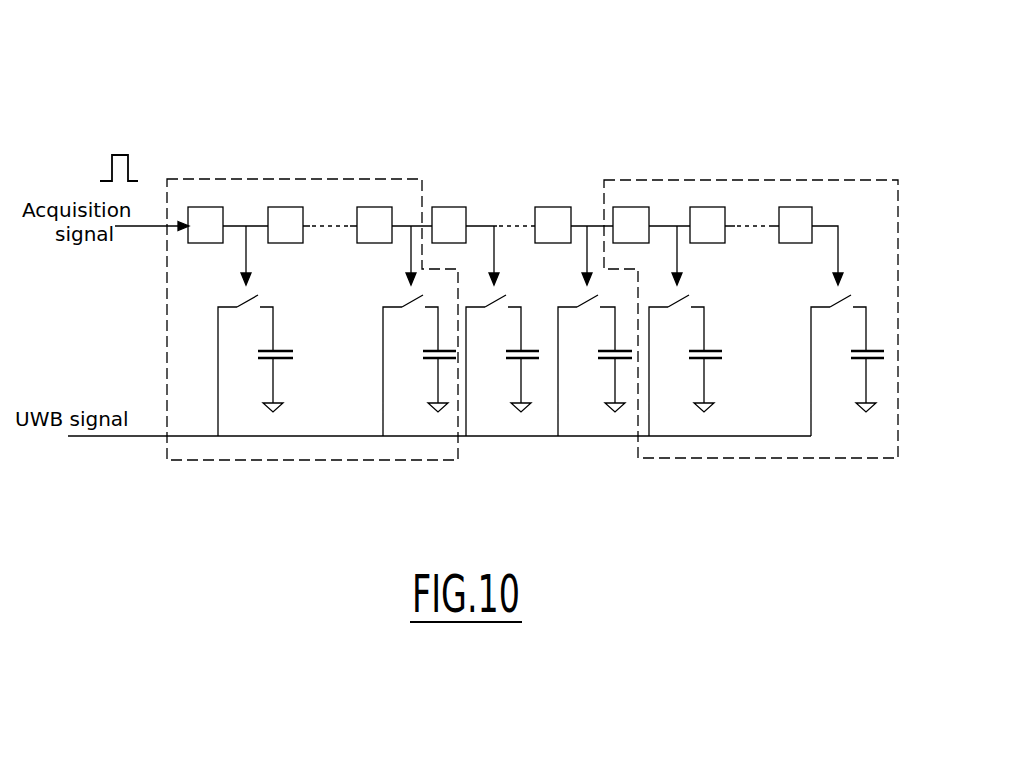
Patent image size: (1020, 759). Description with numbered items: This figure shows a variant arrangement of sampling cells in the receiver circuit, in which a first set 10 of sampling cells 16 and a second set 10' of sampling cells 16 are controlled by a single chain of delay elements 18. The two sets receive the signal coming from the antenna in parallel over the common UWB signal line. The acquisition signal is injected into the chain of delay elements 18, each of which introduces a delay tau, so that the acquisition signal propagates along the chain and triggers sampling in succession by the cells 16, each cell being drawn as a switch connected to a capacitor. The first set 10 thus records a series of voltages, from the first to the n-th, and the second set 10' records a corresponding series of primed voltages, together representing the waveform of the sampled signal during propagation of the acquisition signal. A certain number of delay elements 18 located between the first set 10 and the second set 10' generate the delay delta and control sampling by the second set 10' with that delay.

The first set of sampling cells 10 is at (312, 259).
The second set of sampling cells 10' is at (751, 257).
The sampling cell 16 is at (290, 322).
The delay element 18 is at (458, 212).